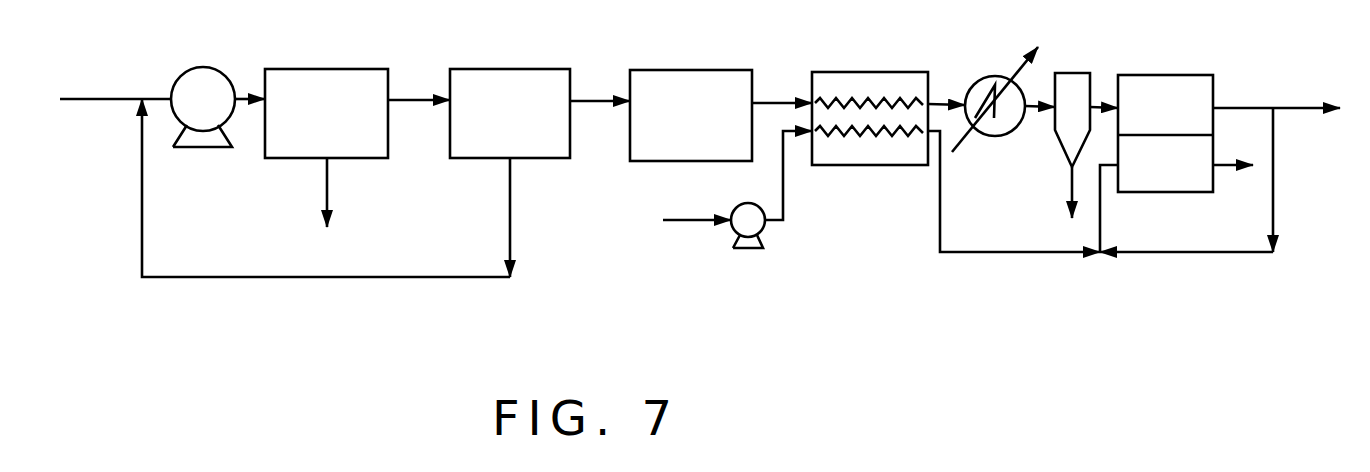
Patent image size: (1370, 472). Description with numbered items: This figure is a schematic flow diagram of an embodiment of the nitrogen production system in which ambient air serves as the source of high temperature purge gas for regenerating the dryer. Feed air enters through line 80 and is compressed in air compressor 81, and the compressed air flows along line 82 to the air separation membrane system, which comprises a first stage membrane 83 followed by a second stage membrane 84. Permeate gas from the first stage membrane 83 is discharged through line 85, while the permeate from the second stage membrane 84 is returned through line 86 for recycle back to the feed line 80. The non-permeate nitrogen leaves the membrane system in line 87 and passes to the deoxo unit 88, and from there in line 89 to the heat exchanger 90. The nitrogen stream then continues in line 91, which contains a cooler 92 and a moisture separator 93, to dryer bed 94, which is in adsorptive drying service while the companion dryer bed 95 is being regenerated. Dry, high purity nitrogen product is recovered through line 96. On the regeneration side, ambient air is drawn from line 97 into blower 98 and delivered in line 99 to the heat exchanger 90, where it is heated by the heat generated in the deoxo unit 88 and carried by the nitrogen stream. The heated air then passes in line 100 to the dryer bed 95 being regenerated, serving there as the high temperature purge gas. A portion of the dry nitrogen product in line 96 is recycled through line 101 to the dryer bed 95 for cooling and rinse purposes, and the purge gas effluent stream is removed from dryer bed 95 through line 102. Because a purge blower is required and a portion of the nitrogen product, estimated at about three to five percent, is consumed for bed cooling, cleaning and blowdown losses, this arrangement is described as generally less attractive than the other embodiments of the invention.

The feed air line 80 is at (90, 99).
The air compressor 81 is at (203, 67).
The conduit 82 is at (243, 93).
The first stage membrane 83 is at (335, 69).
The second stage membrane 84 is at (498, 69).
The permeate discharge line 85 is at (327, 183).
The second stage permeate recycle line 86 is at (378, 278).
The non-permeate nitrogen line 87 is at (598, 100).
The deoxo unit 88 is at (685, 70).
The nitrogen line to heat exchanger 89 is at (780, 102).
The heat exchanger 90 is at (870, 72).
The nitrogen line to dryer 91 is at (938, 102).
The cooler 92 is at (1002, 75).
The moisture separator 93 is at (1070, 73).
The dryer bed 94 is at (1155, 75).
The dryer bed 95 is at (1138, 193).
The nitrogen product line 96 is at (1250, 108).
The ambient air line 97 is at (697, 220).
The blower 98 is at (735, 232).
The air line to heat exchanger 99 is at (783, 183).
The heated air line 100 is at (965, 252).
The nitrogen recycle line 101 is at (1168, 253).
The purge gas effluent line 102 is at (1222, 165).